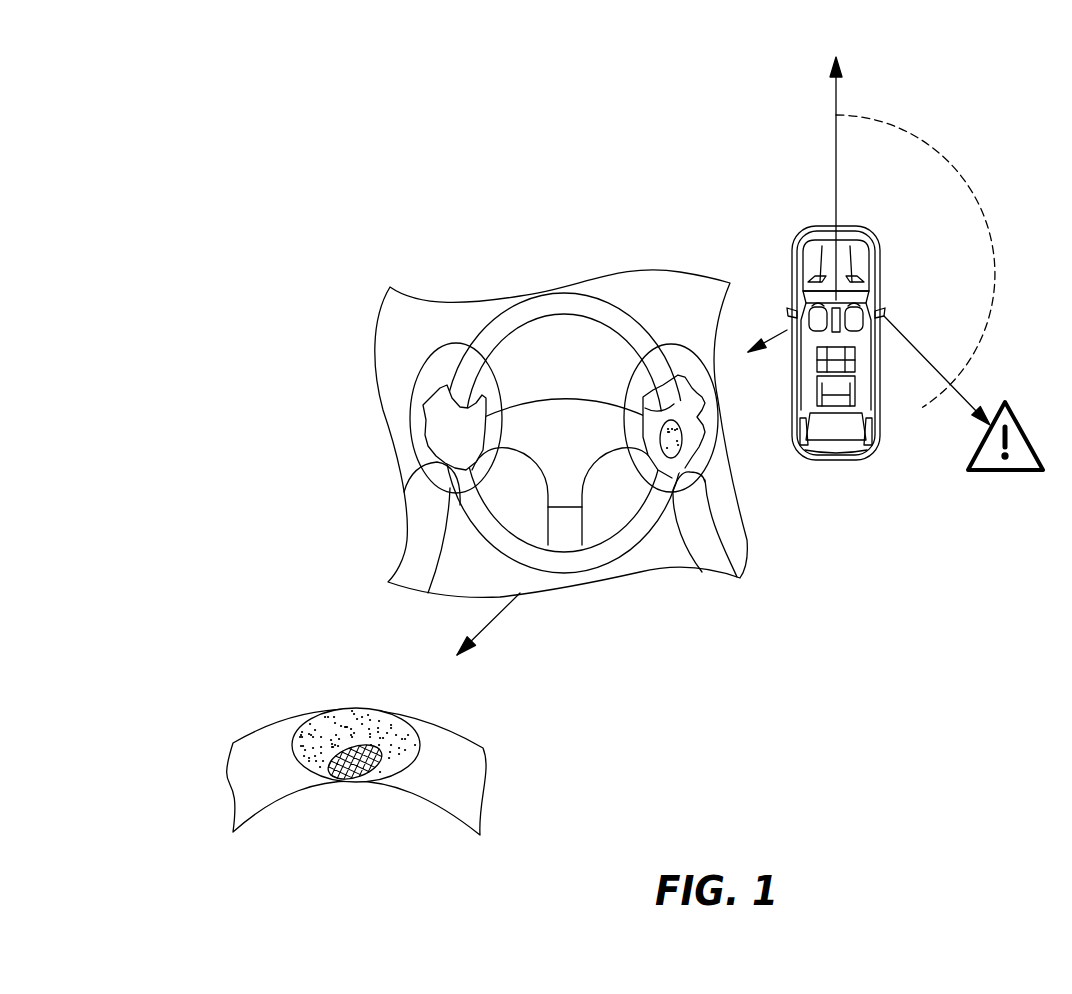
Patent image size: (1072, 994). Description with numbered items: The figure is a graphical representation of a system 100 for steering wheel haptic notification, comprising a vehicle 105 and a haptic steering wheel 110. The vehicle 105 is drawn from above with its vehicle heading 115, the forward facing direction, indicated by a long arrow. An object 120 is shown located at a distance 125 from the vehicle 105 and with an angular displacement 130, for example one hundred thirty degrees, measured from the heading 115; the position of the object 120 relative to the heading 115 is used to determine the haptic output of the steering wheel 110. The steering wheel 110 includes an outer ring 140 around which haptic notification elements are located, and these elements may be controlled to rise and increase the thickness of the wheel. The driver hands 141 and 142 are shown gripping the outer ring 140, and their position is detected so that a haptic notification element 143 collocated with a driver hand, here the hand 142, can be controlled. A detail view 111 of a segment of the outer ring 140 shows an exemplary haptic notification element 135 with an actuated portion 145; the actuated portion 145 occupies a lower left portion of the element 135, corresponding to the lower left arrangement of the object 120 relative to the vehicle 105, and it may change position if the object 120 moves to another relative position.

The system 100 is at (745, 155).
The vehicle 105 is at (805, 252).
The haptic steering wheel 110 is at (362, 349).
The steering wheel rim detail view 111 is at (216, 634).
The vehicle heading 115 is at (838, 95).
The object 120 is at (987, 473).
The distance 125 is at (937, 378).
The angular displacement 130 is at (940, 180).
The haptic notification element 135 is at (400, 717).
The outer ring 140 is at (578, 298).
The driver hand 141 is at (433, 432).
The driver hand 142 is at (697, 418).
The haptic notification element 143 is at (682, 441).
The actuated portion 145 is at (348, 780).